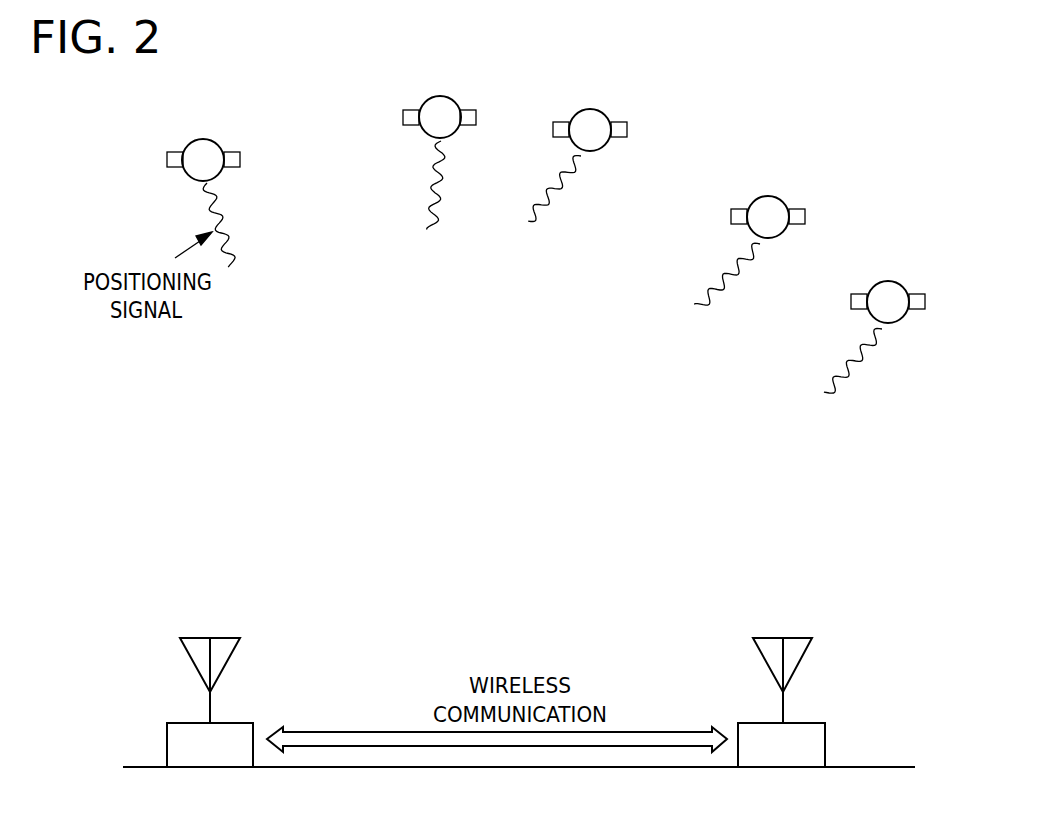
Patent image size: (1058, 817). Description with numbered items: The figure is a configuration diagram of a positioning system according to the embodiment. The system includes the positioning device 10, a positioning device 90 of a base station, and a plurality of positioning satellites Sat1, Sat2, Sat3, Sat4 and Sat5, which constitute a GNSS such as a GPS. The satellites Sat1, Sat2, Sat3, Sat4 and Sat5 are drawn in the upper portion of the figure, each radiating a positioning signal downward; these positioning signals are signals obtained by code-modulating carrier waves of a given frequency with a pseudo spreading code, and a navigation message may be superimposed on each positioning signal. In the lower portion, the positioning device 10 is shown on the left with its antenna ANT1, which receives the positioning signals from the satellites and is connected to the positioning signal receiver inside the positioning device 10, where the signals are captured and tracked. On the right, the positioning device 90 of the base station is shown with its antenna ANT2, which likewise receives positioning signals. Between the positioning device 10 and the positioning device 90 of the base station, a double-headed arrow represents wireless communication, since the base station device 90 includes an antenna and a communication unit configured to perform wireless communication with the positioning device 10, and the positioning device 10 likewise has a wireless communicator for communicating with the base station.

The positioning satellite Sat1 is at (232, 125).
The positioning satellite Sat2 is at (468, 80).
The positioning satellite Sat3 is at (618, 97).
The positioning satellite Sat4 is at (798, 182).
The positioning satellite Sat5 is at (920, 265).
The positioning device 10 is at (148, 677).
The positioning device of a base station 90 is at (727, 667).
The antenna ANT1 is at (233, 652).
The antenna ANT2 is at (805, 660).